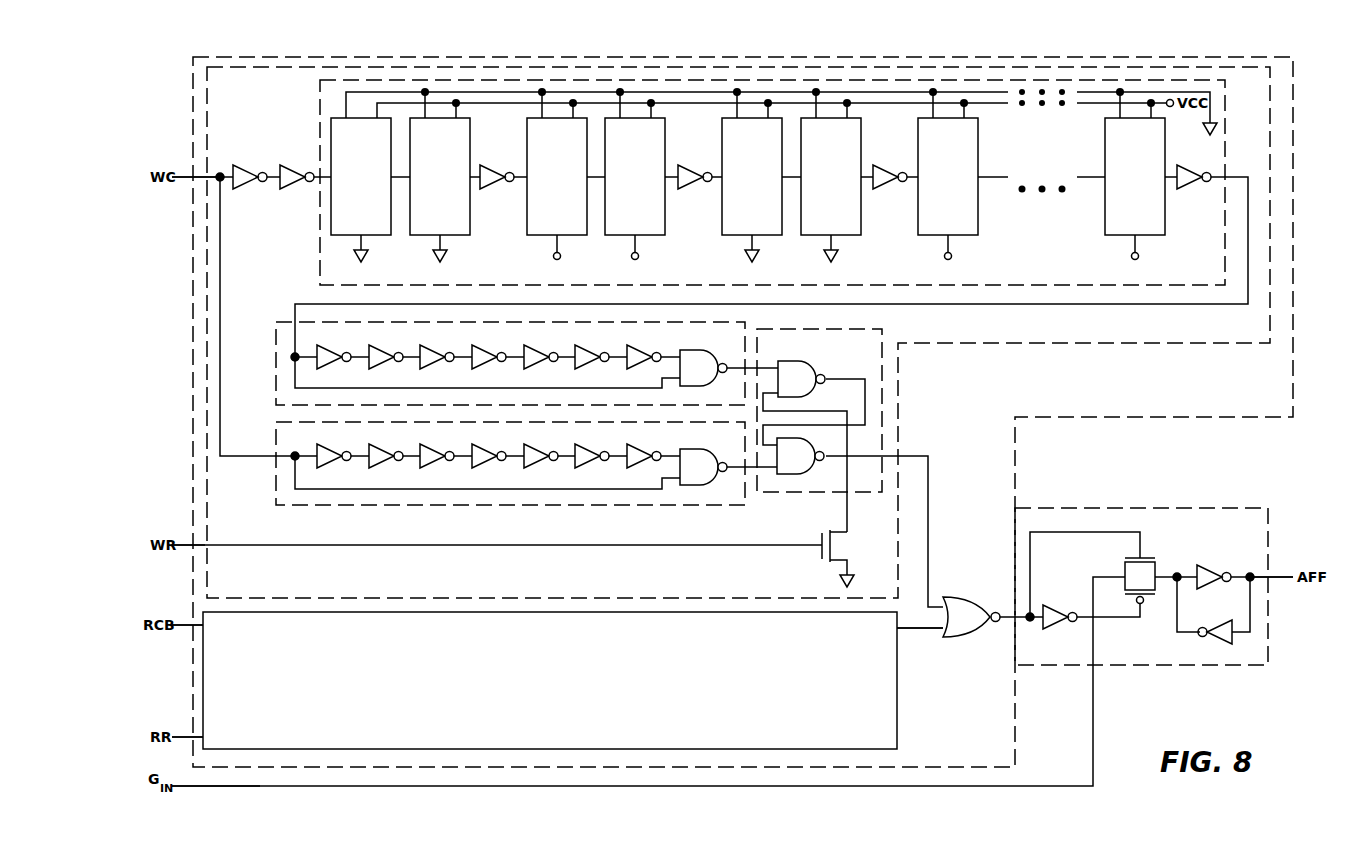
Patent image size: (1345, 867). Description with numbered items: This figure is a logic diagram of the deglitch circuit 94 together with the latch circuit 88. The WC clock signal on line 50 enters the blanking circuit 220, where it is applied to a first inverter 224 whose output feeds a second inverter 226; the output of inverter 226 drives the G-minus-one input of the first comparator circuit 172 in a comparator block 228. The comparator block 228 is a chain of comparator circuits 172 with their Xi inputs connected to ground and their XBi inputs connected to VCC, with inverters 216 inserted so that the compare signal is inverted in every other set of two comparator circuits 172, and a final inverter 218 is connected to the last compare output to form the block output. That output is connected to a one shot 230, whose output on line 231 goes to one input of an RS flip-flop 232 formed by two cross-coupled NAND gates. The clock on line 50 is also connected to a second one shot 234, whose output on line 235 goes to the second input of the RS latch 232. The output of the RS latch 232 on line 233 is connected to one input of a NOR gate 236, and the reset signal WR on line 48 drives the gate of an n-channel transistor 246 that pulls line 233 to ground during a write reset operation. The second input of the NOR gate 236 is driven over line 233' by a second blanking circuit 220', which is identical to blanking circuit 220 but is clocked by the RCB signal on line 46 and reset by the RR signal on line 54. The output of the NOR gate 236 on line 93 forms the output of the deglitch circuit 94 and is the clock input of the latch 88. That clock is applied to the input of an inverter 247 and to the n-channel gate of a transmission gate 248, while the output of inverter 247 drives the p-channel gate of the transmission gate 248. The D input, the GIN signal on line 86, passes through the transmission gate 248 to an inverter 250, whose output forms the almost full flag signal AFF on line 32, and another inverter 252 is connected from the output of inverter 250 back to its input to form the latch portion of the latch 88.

The almost full flag line 32 is at (1283, 575).
The RCB signal line 46 is at (180, 622).
The WR reset signal line 48 is at (180, 543).
The WC clock signal line 50 is at (182, 180).
The RR signal line 54 is at (180, 735).
The GIN line 86 is at (186, 768).
The latch circuit 88 is at (1113, 508).
The deglitch circuit output line 93 is at (1000, 620).
The deglitch circuit 94 is at (1195, 417).
The comparator circuit 172 is at (1164, 265).
The inverters 216 is at (893, 131).
The final inverter 218 is at (1190, 163).
The blanking circuit 220 is at (738, 332).
The second blanking circuit 220' is at (596, 680).
The first inverter 224 is at (250, 163).
The second inverter 226 is at (295, 163).
The comparator block 228 is at (320, 247).
The one shot 230 is at (276, 335).
The one shot output line 231 is at (757, 345).
The RS flip-flop 232 is at (885, 337).
The RS latch output line 233 is at (886, 501).
The second blanking circuit output line 233' is at (924, 657).
The second one shot 234 is at (276, 447).
The second one shot output line 235 is at (757, 470).
The NOR gate 236 is at (965, 597).
The n-channel transistor 246 is at (822, 567).
The inverter 247 is at (1065, 600).
The transmission gate 248 is at (1123, 564).
The inverter 250 is at (1213, 562).
The inverter 252 is at (1210, 641).